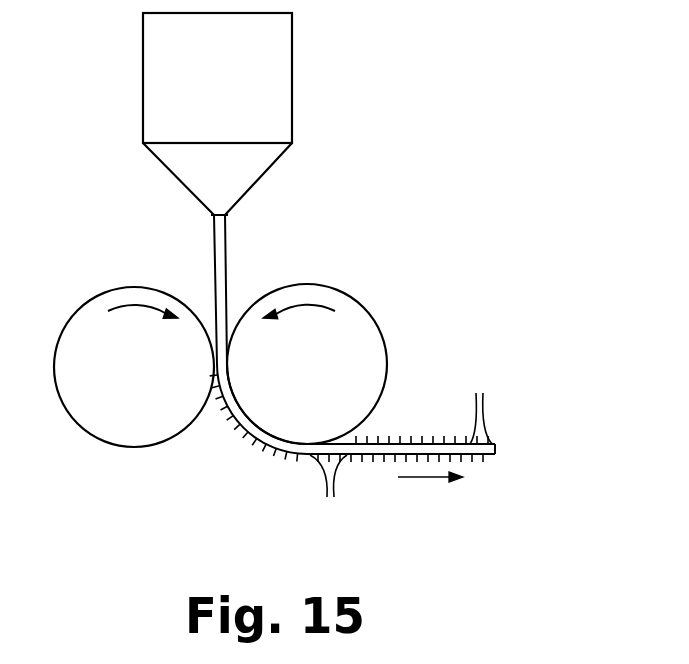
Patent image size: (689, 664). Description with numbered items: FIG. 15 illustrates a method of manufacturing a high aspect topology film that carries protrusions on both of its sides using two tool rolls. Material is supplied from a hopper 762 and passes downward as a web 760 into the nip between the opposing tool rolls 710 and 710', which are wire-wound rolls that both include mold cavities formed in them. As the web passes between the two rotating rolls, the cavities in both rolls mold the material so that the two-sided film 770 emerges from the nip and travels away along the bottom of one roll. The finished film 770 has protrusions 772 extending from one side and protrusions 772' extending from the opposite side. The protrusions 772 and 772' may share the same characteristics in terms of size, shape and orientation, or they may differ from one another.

The hopper / extruder 762 is at (277, 57).
The web / extruded sheet 760 is at (220, 245).
The tool roll 710' is at (108, 356).
The tool roll 710 is at (332, 349).
The film 770 is at (496, 449).
The protrusions 772 is at (485, 403).
The protrusions 772' is at (343, 496).